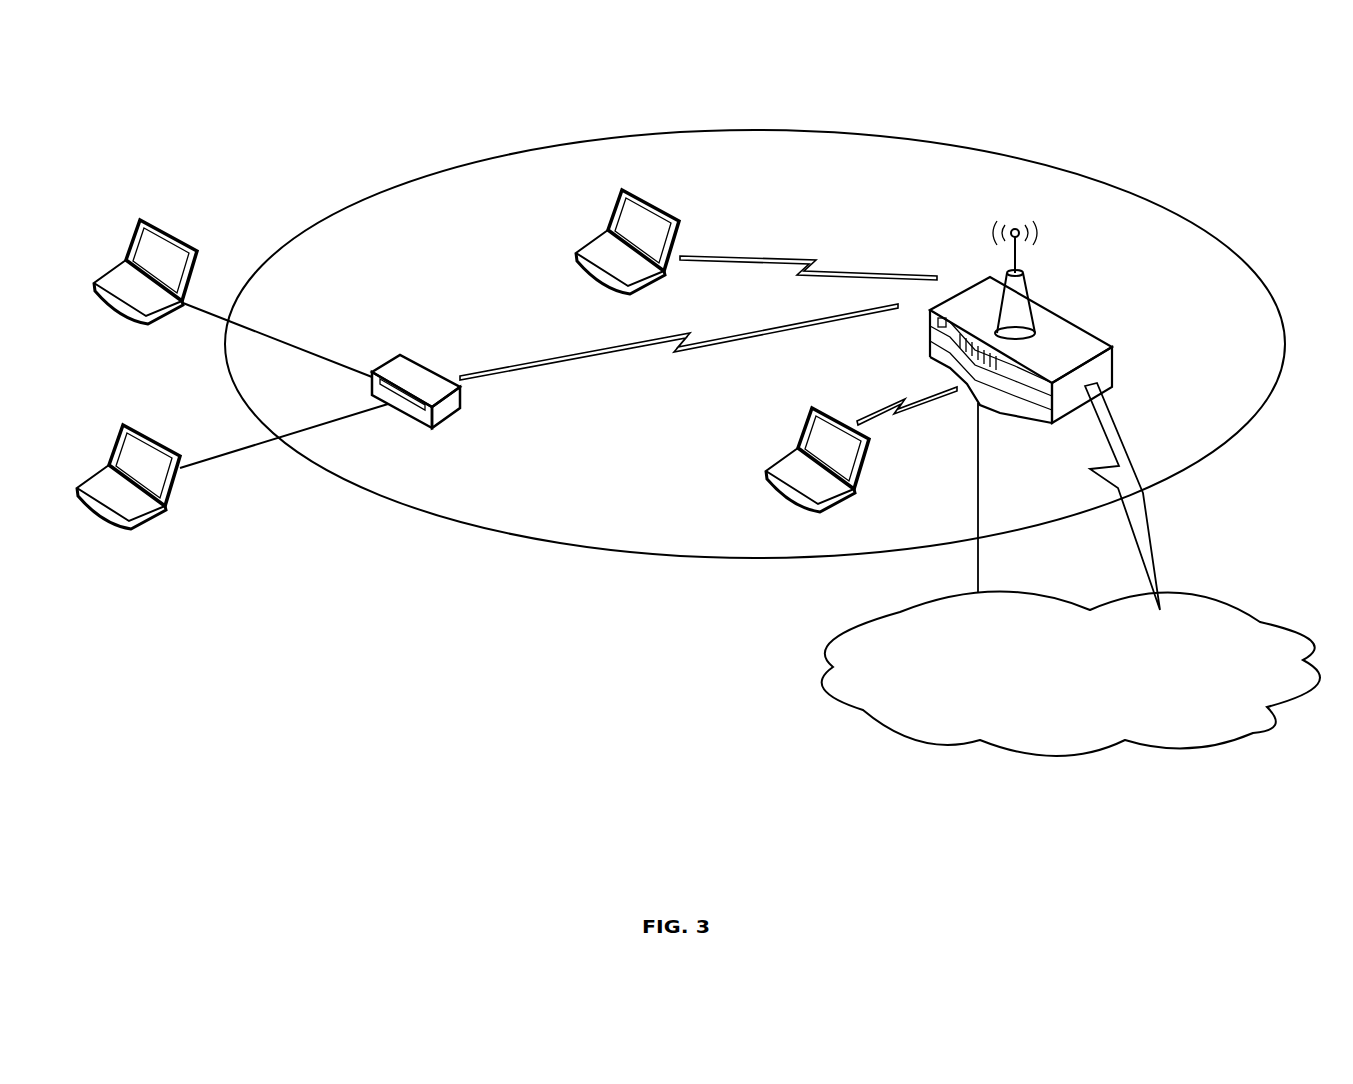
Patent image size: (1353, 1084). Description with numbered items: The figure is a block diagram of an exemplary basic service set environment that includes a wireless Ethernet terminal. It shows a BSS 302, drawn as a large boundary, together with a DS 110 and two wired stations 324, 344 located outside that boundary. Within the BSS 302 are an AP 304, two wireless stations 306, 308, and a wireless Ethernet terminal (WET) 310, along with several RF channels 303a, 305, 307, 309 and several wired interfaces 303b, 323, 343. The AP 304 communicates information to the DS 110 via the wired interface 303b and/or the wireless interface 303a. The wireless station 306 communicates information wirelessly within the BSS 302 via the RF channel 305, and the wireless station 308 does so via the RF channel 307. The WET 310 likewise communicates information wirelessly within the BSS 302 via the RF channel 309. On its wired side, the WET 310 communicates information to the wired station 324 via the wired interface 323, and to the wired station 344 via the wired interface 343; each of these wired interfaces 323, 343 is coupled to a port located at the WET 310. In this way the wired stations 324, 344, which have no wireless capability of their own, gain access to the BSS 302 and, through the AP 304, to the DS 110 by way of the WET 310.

The BSS 302 is at (507, 153).
The AP 304 is at (949, 299).
The RF channel 305 is at (780, 262).
The wireless station 306 is at (605, 200).
The RF channel 307 is at (884, 410).
The wireless station 308 is at (796, 417).
The RF channel 309 is at (730, 337).
The wireless Ethernet terminal 310 is at (422, 356).
The wired interface 323 is at (277, 338).
The wired station 324 is at (122, 228).
The wired interface 343 is at (294, 428).
The wired station 344 is at (105, 432).
The wireless interface 303a is at (1127, 438).
The wired interface 303b is at (978, 479).
The DS 110 is at (1250, 732).